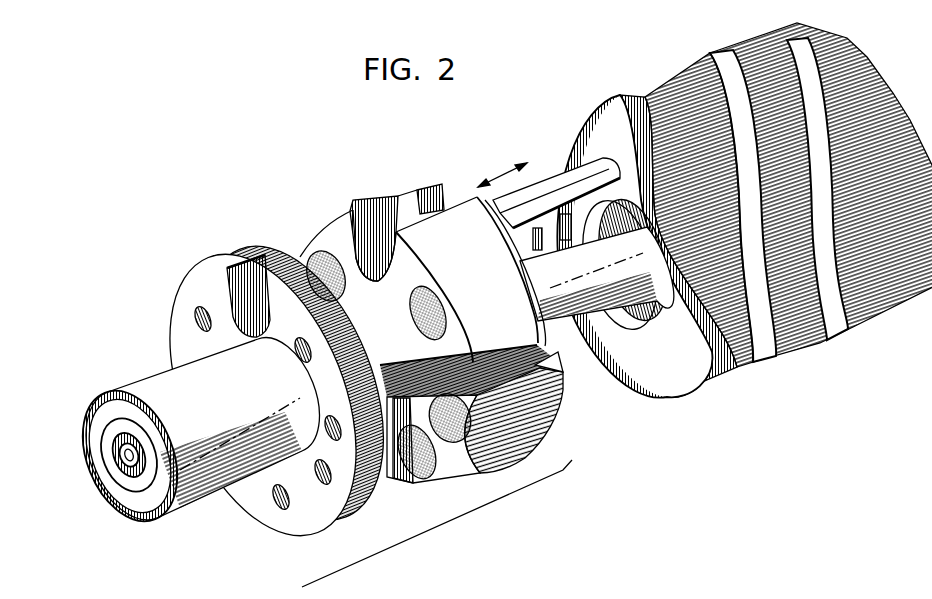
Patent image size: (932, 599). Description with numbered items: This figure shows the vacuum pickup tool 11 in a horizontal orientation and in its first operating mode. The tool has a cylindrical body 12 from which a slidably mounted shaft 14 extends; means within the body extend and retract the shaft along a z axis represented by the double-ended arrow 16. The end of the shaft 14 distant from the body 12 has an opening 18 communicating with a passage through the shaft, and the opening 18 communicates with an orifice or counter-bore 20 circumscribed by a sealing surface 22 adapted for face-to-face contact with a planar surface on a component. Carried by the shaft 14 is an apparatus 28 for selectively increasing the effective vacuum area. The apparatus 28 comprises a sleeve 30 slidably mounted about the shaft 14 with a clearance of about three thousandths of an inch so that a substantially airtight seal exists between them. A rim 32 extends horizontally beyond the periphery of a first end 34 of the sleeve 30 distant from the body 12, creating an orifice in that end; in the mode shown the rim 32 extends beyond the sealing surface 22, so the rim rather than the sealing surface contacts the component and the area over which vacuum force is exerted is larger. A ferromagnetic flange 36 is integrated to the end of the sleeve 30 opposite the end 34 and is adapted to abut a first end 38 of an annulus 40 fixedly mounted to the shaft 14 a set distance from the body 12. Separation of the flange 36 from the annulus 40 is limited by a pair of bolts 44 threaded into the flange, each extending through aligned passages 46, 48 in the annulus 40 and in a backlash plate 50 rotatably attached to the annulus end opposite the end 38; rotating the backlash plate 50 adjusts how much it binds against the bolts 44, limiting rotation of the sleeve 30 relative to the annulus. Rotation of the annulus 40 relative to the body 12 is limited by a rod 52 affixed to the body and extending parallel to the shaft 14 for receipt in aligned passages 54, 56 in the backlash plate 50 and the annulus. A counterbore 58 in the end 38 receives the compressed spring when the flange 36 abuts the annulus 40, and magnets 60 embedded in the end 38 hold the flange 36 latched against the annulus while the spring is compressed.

The vacuum pickup tool 11 is at (714, 440).
The cylindrical body 12 is at (887, 295).
The shaft 14 is at (603, 280).
The double-ended arrow 16 is at (488, 182).
The opening 18 is at (118, 470).
The orifice or counter-bore 20 is at (116, 446).
The sealing surface 22 is at (137, 488).
The apparatus 28 is at (437, 523).
The sleeve 30 is at (143, 392).
The rim 32 is at (118, 460).
The first end 34 is at (157, 517).
The ferromagnetic flange 36 is at (197, 268).
The first end 38 is at (430, 485).
The annulus 40 is at (352, 203).
The bolts 44 is at (470, 340).
The passage 46 is at (553, 420).
The passage 48 is at (557, 363).
The backlash plate 50 is at (468, 200).
The rod 52 is at (576, 179).
The passage 54 is at (436, 188).
The passage 56 is at (392, 200).
The counterbore 58 is at (387, 313).
The magnets 60 is at (447, 294).